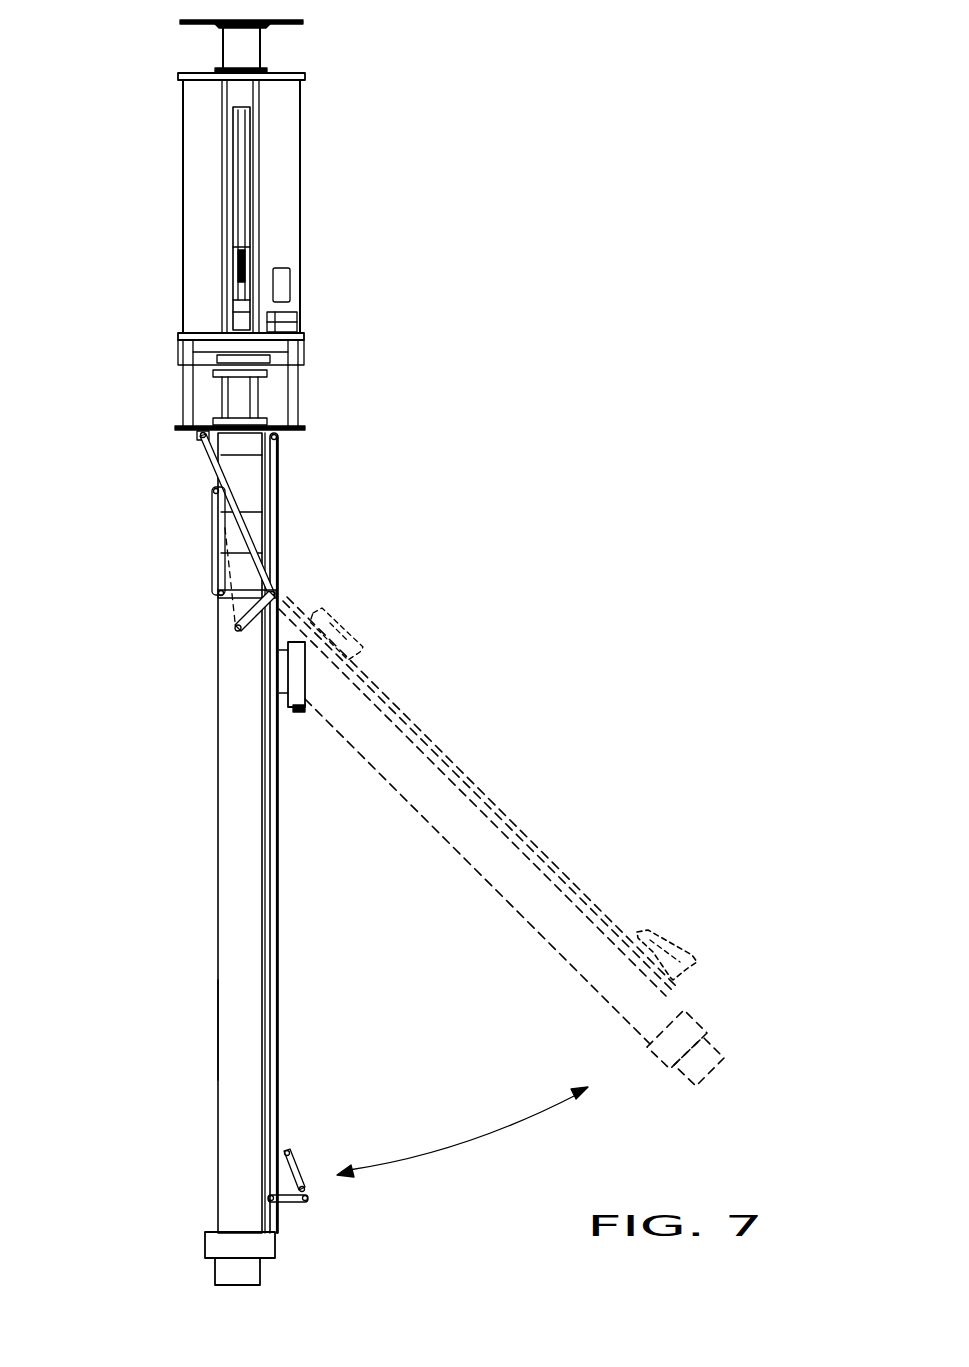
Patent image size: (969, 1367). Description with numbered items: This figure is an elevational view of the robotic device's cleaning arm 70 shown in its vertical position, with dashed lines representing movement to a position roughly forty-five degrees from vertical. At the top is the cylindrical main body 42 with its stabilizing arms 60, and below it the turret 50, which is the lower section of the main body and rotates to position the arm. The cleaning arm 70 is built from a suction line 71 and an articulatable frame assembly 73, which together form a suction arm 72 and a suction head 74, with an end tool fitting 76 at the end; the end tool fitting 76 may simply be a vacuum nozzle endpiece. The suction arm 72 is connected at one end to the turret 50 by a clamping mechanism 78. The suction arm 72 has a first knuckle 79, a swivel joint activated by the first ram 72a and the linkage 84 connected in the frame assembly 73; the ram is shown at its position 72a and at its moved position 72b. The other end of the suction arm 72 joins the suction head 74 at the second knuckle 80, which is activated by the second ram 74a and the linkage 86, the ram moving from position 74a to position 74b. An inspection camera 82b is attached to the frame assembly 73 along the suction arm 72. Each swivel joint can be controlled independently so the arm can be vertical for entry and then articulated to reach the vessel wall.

The main body 42 is at (287, 150).
The stabilizing arms 60 is at (242, 205).
The turret 50 is at (293, 397).
The cleaning arm 70 is at (568, 755).
The suction line 71 is at (238, 782).
The suction arm 72 is at (279, 562).
The first ram 72a is at (213, 558).
The first ram moved position 72b is at (232, 575).
The articulatable frame assembly 73 is at (272, 872).
The suction head 74 is at (429, 1121).
The second ram 74a is at (295, 1162).
The second ram moved position 74b is at (657, 940).
The end tool fitting 76 is at (227, 1272).
The clamping mechanism 78 is at (175, 447).
The first knuckle 79 is at (195, 607).
The second knuckle 80 is at (185, 1034).
The inspection camera 82b is at (305, 680).
The linkage 84 is at (236, 580).
The linkage 86 is at (252, 1028).